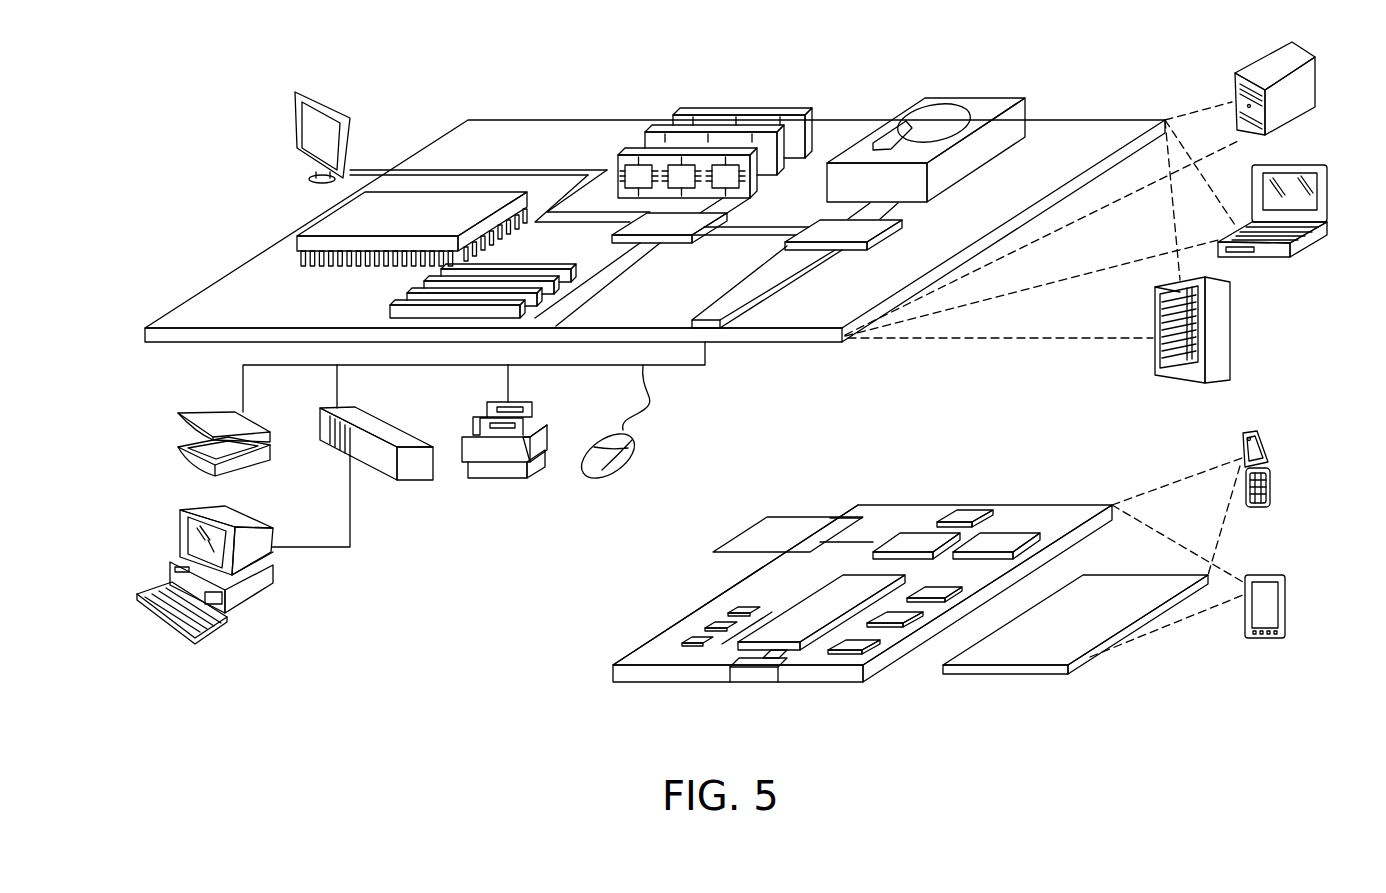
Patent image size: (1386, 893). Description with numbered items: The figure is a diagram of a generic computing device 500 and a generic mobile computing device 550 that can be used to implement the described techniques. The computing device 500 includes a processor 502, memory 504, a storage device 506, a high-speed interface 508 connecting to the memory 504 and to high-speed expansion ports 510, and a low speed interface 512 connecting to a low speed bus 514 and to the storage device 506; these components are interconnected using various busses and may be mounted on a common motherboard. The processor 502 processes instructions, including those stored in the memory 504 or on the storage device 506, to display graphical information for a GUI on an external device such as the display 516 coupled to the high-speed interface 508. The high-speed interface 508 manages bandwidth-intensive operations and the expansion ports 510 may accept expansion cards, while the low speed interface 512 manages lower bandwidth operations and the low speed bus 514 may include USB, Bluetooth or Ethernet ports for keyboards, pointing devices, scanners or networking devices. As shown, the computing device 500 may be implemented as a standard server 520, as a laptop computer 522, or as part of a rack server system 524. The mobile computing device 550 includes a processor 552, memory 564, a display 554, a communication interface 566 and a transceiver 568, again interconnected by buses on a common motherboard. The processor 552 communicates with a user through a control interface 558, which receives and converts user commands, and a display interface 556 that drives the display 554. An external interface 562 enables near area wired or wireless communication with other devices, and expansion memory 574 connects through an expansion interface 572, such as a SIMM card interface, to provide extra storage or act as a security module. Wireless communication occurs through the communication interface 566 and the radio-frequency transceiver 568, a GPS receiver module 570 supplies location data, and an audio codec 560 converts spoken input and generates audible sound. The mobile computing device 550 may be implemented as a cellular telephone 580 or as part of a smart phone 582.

The computing device 500 is at (422, 68).
The processor 502 is at (318, 215).
The memory 504 is at (745, 114).
The storage device 506 is at (963, 99).
The high-speed interface 508 is at (680, 224).
The high-speed expansion ports 510 is at (417, 292).
The low speed interface 512 is at (819, 229).
The low speed bus 514 is at (711, 315).
The display 516 is at (301, 90).
The standard server 520 is at (1254, 68).
The laptop computer 522 is at (1306, 165).
The rack server system 524 is at (1233, 329).
The mobile computing device 550 is at (572, 692).
The processor 552 is at (790, 621).
The display 554 is at (1112, 590).
The display interface 556 is at (864, 642).
The control interface 558 is at (900, 617).
The audio codec 560 is at (937, 589).
The external interface 562 is at (752, 668).
The memory 564 is at (707, 632).
The communication interface 566 is at (918, 537).
The transceiver 568 is at (1000, 537).
The GPS receiver module 570 is at (961, 513).
The expansion interface 572 is at (846, 513).
The expansion memory 574 is at (767, 517).
The cellular telephone 580 is at (1250, 432).
The smart phone 582 is at (1261, 574).